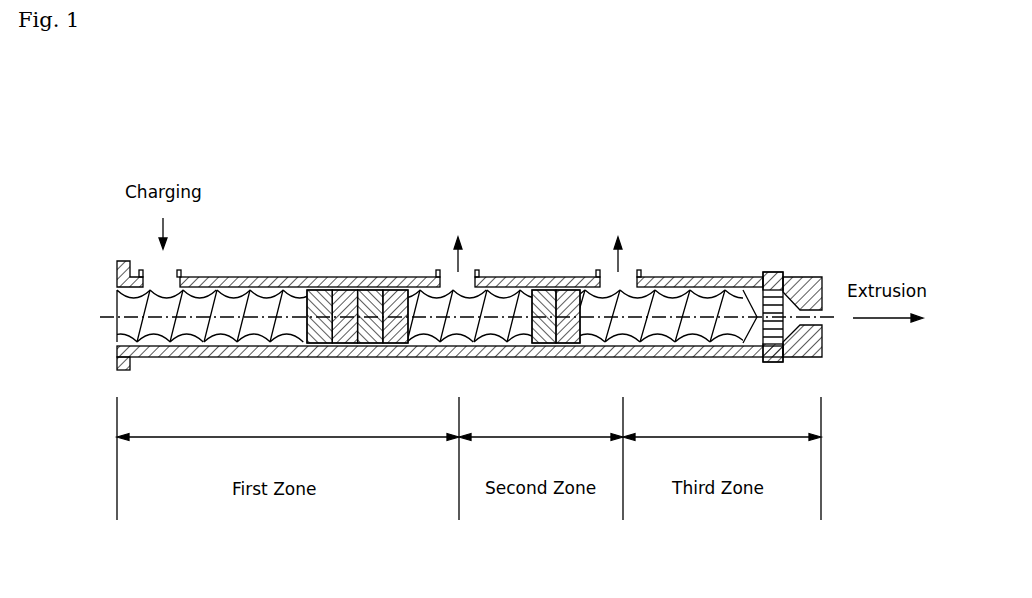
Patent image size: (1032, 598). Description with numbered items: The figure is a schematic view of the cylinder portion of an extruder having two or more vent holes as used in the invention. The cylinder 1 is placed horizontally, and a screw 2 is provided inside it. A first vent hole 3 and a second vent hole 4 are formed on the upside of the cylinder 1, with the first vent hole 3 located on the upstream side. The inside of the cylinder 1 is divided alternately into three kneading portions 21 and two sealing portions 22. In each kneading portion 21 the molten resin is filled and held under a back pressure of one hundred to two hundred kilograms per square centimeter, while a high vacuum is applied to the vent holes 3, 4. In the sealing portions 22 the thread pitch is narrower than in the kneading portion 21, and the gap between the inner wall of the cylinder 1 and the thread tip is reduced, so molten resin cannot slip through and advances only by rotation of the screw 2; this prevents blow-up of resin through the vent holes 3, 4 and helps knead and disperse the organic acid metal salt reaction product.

The cylinder 1 is at (116, 351).
The screw 2 is at (426, 242).
The kneading portion 21 is at (236, 289).
The sealing portion 22 is at (343, 302).
The first vent hole 3 is at (462, 271).
The second vent hole 4 is at (627, 272).